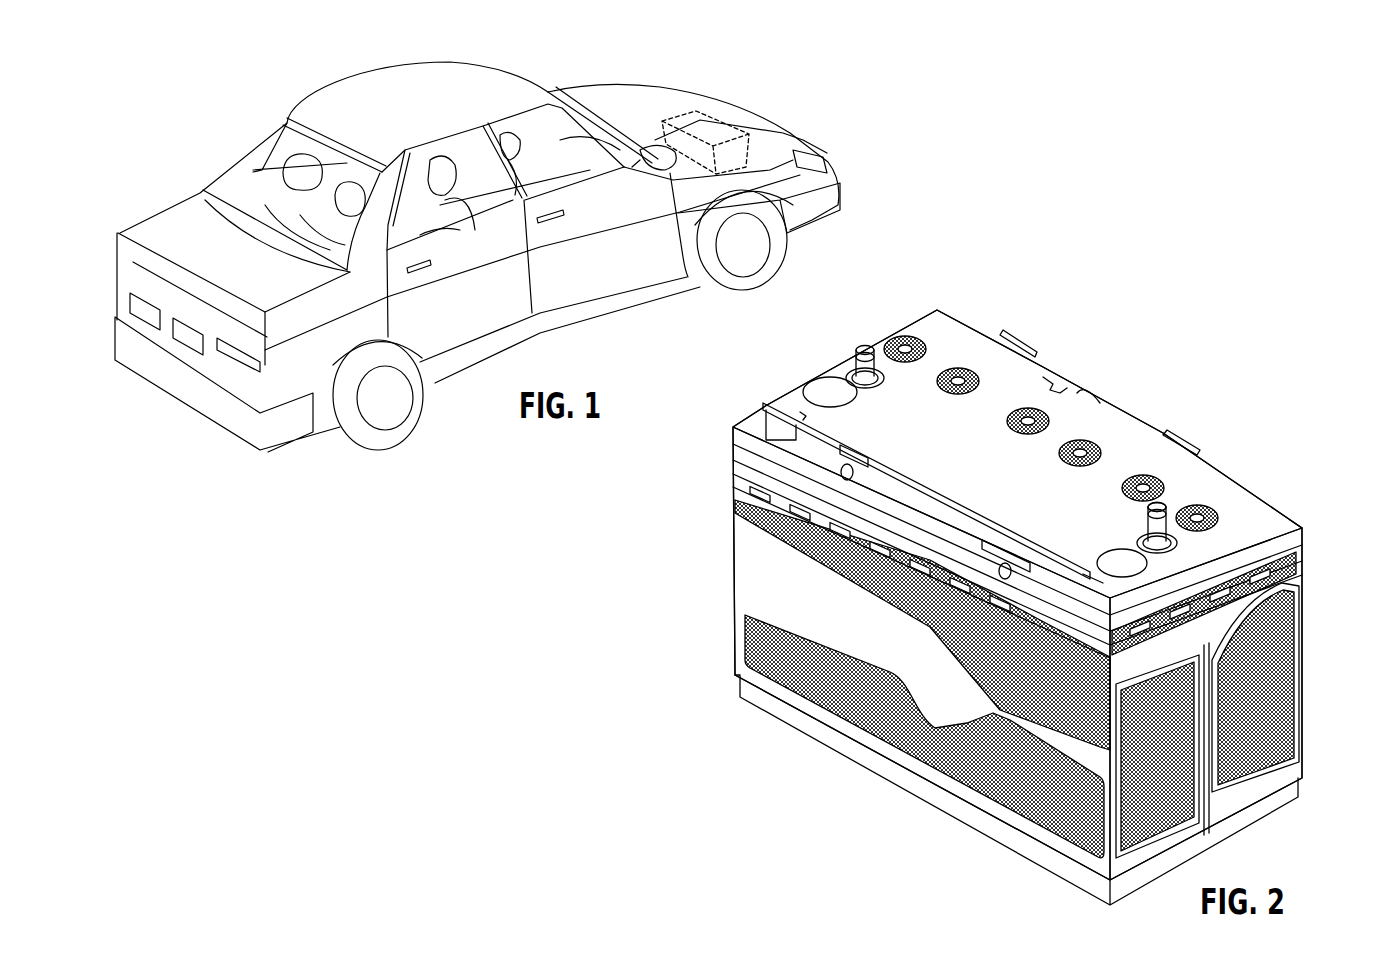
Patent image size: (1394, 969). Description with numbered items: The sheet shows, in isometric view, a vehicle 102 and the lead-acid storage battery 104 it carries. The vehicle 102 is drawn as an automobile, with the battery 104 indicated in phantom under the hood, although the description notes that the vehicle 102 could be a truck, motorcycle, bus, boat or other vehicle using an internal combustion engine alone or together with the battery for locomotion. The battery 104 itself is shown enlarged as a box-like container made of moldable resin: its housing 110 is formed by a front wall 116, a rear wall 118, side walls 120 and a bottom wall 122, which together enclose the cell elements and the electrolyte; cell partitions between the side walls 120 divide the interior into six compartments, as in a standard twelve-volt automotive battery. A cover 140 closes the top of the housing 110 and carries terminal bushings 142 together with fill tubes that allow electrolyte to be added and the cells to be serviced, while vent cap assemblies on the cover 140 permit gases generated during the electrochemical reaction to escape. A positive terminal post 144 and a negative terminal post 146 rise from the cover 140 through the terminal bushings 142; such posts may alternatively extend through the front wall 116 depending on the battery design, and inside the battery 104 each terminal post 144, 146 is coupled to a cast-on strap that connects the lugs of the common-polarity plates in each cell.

In FIG. 1, the vehicle 102 is at (308, 89).
In FIG. 1, the battery 104 is at (713, 122).
In FIG. 2, the battery 104 is at (1164, 374).
In FIG. 2, the housing 110 is at (760, 563).
In FIG. 2, the front wall 116 is at (892, 675).
In FIG. 2, the rear wall 118 is at (1304, 580).
In FIG. 2, the side walls 120 is at (734, 516).
In FIG. 2, the bottom wall 122 is at (930, 810).
In FIG. 2, the cover 140 is at (977, 428).
In FIG. 2, the terminal bushings 142 is at (864, 356).
In FIG. 2, the positive terminal post 144 is at (866, 348).
In FIG. 2, the negative terminal post 146 is at (1160, 508).